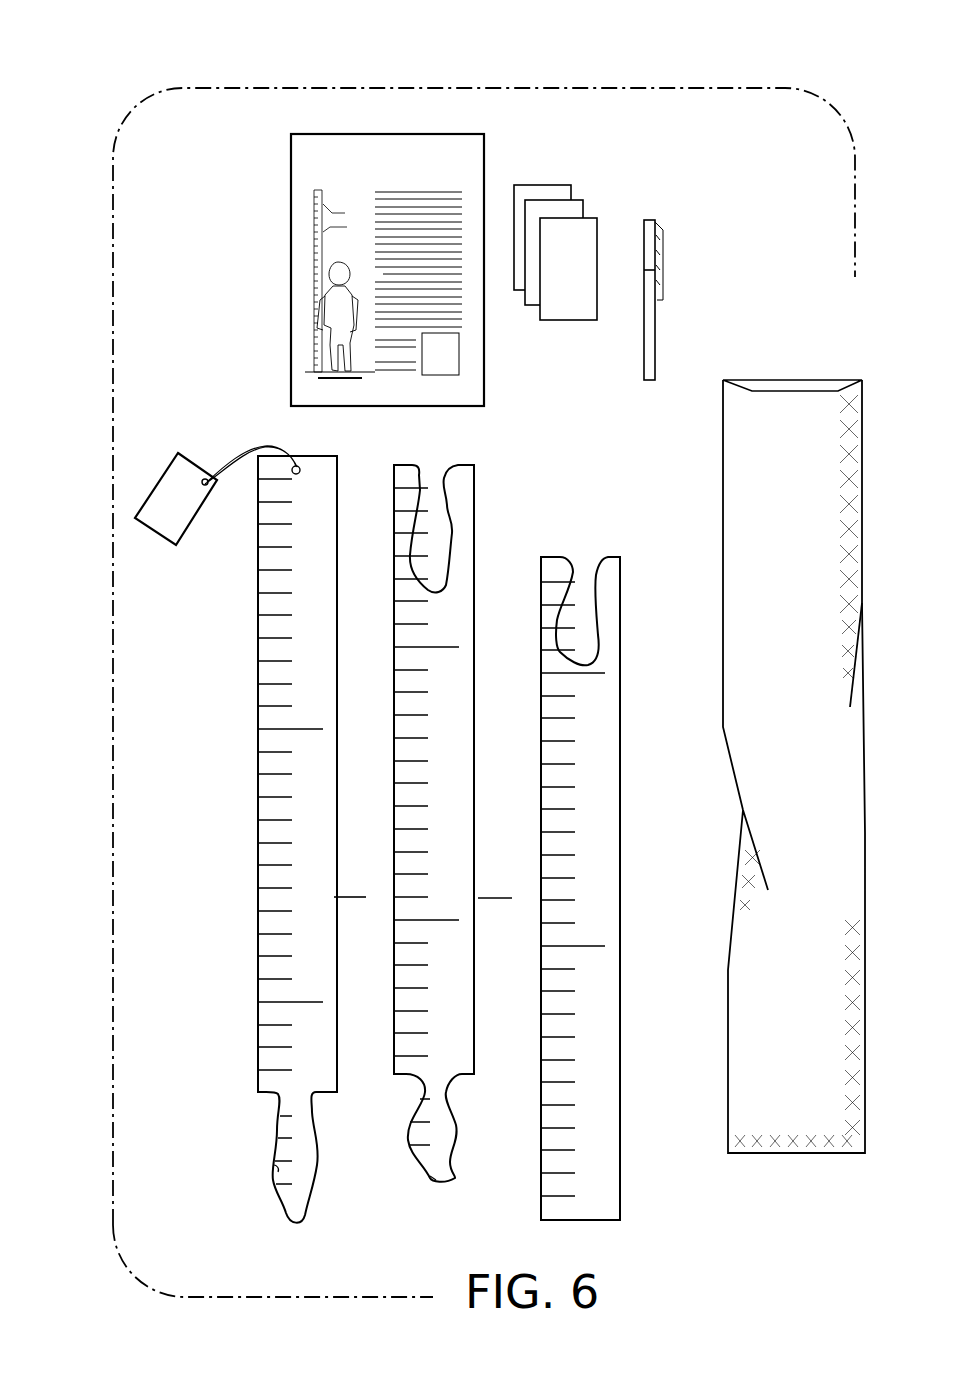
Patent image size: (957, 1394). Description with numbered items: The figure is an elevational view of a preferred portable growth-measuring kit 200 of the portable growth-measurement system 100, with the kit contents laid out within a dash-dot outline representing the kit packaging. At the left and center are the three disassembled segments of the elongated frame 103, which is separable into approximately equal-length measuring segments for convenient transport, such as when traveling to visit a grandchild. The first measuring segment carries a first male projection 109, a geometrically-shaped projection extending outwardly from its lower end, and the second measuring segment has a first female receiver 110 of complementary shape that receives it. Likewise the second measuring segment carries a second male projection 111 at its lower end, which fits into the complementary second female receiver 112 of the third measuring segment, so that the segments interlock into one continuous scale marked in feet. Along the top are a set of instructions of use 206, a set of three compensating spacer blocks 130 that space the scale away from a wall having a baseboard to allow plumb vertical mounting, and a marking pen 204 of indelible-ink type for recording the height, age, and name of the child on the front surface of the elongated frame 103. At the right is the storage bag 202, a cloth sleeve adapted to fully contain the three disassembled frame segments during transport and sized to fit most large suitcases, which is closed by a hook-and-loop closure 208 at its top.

The portable growth-measurement system 100 is at (148, 50).
The portable growth-measuring kit 200 is at (113, 218).
The instructions of use 206 is at (291, 265).
The compensating spacer blocks 130 is at (588, 183).
The marking pen 204 is at (657, 338).
The storage bag 202 is at (700, 456).
The hook-and-loop closure 208 is at (790, 392).
The elongated frame 103 is at (210, 1109).
The first male projection 109 is at (272, 1172).
The first female receiver 110 is at (435, 524).
The second male projection 111 is at (433, 1170).
The second female receiver 112 is at (585, 569).